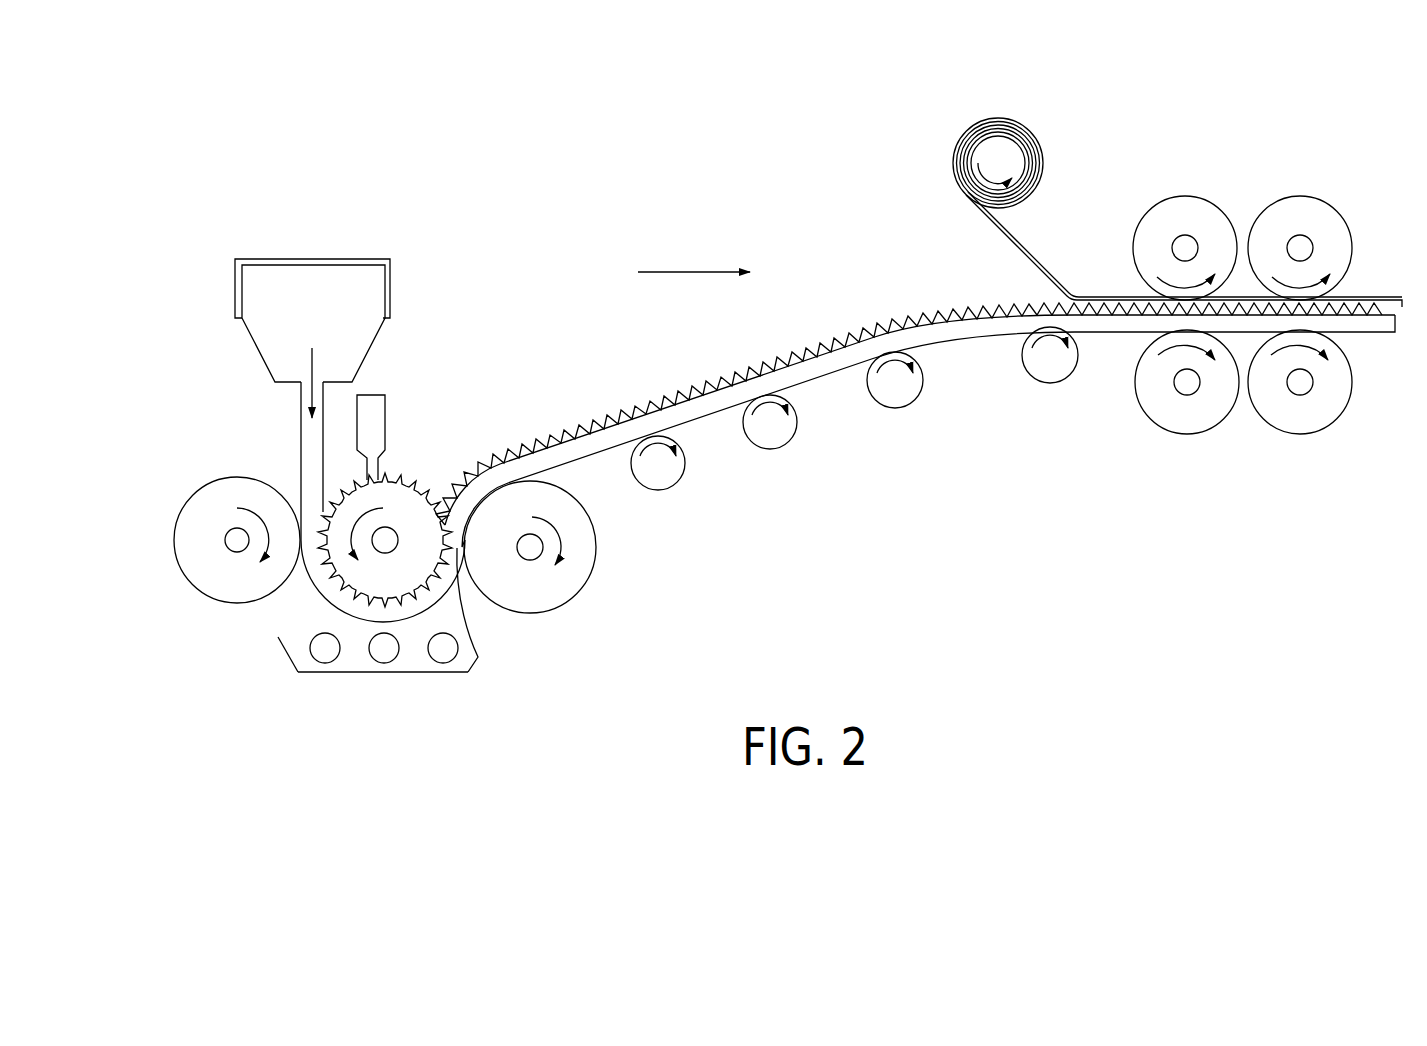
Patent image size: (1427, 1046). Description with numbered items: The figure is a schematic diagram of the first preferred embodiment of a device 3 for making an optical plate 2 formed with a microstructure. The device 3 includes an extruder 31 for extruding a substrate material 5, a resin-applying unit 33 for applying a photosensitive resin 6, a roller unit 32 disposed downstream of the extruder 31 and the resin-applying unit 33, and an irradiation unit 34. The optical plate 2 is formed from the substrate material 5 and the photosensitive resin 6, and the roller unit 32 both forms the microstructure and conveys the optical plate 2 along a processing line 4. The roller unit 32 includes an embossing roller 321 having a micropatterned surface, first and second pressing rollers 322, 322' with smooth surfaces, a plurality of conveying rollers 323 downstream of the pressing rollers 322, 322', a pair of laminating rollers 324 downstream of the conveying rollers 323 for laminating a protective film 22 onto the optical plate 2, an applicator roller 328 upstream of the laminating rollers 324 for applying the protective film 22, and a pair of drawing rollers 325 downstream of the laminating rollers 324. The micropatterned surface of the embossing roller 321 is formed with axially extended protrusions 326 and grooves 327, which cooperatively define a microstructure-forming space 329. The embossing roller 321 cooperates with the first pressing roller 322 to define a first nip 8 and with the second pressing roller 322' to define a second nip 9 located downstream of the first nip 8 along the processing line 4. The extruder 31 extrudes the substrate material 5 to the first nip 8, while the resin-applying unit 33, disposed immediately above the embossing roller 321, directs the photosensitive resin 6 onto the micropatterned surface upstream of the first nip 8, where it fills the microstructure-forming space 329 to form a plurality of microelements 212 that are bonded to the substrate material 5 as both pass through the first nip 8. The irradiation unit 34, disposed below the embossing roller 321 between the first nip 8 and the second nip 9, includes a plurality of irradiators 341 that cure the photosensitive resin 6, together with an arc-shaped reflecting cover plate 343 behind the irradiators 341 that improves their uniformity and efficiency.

The optical plate 2 is at (608, 390).
The microelements 212 is at (643, 412).
The device 3 is at (264, 652).
The extruder 31 is at (395, 283).
The roller unit 32 is at (472, 607).
The embossing roller 321 is at (428, 518).
The first pressing roller 322 is at (237, 563).
The second pressing roller 322' is at (572, 564).
The conveying rollers 323 is at (676, 484).
The laminating rollers 324 is at (1187, 215).
The drawing rollers 325 is at (1302, 213).
The protrusions 326 is at (436, 510).
The grooves 327 is at (418, 500).
The applicator roller 328 is at (1003, 142).
The microstructure-forming space 329 is at (405, 493).
The resin-applying unit 33 is at (371, 398).
The irradiation unit 34 is at (442, 682).
The irradiators 341 is at (445, 652).
The reflecting cover plate 343 is at (298, 672).
The processing line 4 is at (694, 248).
The substrate material 5 is at (312, 442).
The photosensitive resin 6 is at (398, 468).
The first nip 8 is at (306, 492).
The second nip 9 is at (485, 637).
The protective film 22 is at (1020, 250).